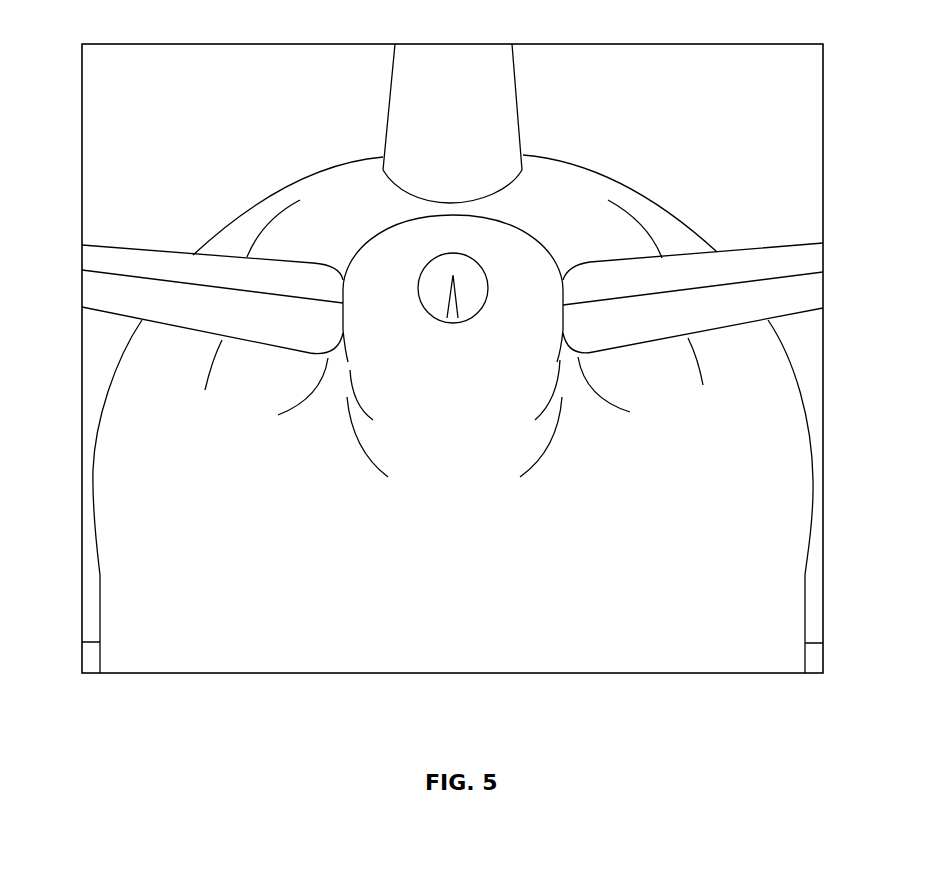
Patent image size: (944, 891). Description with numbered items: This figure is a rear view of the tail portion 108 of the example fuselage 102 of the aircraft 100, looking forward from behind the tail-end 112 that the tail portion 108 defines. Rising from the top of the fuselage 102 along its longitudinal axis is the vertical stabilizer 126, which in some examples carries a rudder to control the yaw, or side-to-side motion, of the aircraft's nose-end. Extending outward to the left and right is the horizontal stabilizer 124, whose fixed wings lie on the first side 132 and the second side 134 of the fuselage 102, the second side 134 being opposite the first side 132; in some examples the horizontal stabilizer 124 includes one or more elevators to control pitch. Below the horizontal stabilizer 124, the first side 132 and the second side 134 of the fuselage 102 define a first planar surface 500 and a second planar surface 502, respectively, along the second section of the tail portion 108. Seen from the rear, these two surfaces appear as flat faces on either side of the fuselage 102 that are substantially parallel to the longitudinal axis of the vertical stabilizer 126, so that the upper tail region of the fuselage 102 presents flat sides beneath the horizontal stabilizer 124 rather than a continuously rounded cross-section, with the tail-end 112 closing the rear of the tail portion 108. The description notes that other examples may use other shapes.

The aircraft 100 is at (685, 98).
The fuselage 102 is at (482, 642).
The tail portion 108 is at (337, 188).
The tail-end 112 is at (455, 288).
The horizontal stabilizer 124 is at (172, 308).
The vertical stabilizer 126 is at (455, 123).
The first side 132 is at (793, 460).
The second side 134 is at (102, 472).
The first planar surface 500 is at (557, 263).
The second planar surface 502 is at (350, 258).